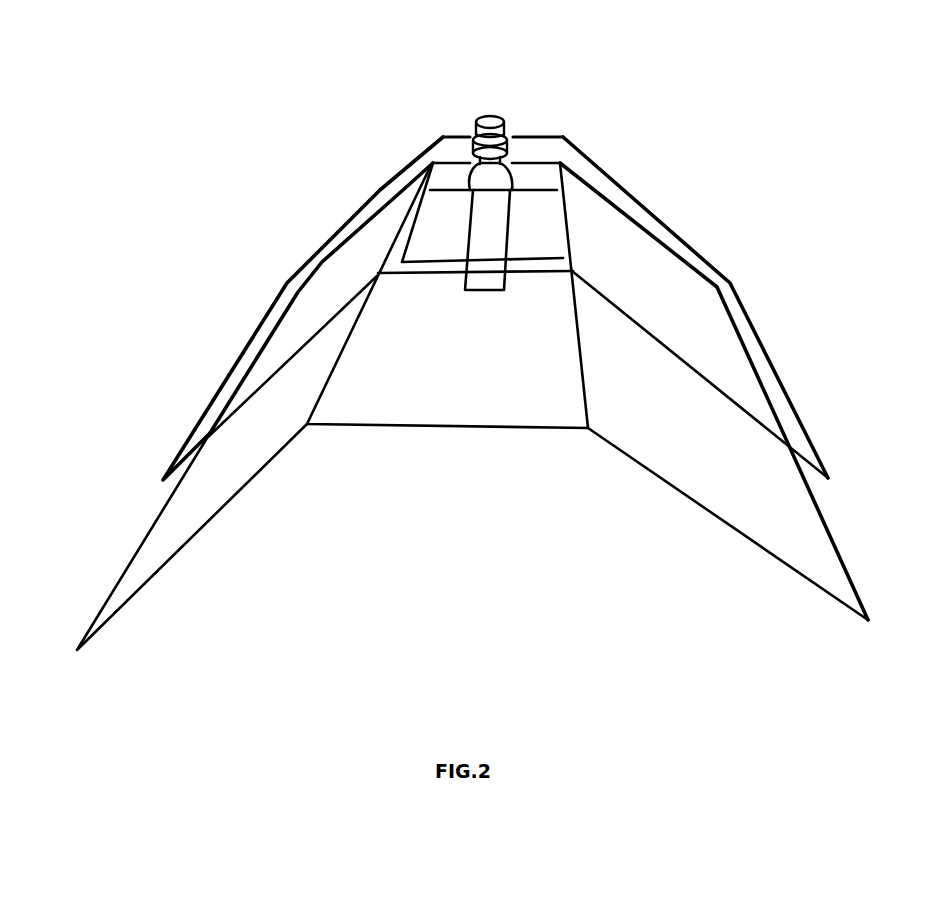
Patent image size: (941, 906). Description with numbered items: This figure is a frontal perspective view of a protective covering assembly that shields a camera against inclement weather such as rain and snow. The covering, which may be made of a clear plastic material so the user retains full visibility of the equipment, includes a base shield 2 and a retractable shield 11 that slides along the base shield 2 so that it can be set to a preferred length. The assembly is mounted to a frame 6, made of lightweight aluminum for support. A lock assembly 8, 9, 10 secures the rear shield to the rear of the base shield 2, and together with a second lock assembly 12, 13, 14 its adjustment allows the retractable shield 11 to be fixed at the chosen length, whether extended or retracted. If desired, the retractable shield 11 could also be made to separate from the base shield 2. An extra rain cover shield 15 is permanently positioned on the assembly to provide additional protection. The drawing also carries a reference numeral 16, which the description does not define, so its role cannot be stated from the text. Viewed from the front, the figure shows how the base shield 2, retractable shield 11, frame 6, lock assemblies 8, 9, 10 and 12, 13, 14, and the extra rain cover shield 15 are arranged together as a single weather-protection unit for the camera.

The base shield 2 is at (737, 375).
The frame 6 is at (487, 226).
The lock assembly 8 is at (503, 123).
The lock assembly 9 is at (503, 177).
The lock assembly 10 is at (491, 125).
The retractable shield 11 is at (780, 522).
The lock assembly 12 is at (480, 149).
The lock assembly 13 is at (517, 165).
The lock assembly 14 is at (475, 138).
The extra rain cover shield 15 is at (433, 235).
The mounting plate 16 is at (495, 200).